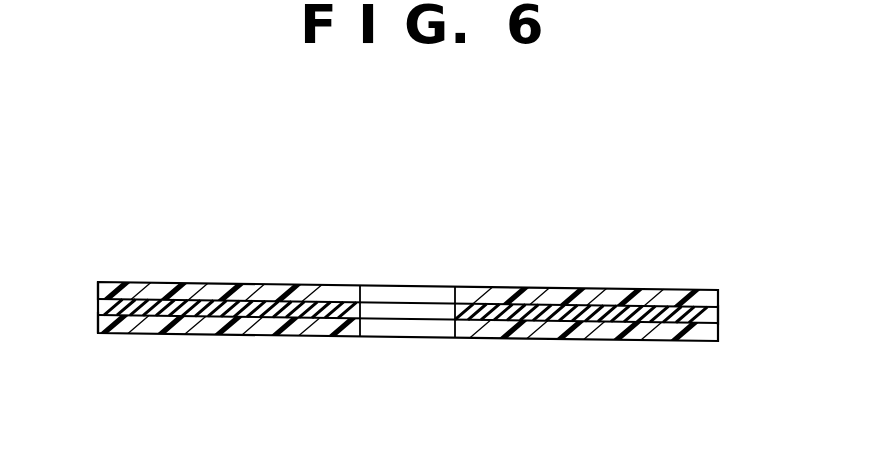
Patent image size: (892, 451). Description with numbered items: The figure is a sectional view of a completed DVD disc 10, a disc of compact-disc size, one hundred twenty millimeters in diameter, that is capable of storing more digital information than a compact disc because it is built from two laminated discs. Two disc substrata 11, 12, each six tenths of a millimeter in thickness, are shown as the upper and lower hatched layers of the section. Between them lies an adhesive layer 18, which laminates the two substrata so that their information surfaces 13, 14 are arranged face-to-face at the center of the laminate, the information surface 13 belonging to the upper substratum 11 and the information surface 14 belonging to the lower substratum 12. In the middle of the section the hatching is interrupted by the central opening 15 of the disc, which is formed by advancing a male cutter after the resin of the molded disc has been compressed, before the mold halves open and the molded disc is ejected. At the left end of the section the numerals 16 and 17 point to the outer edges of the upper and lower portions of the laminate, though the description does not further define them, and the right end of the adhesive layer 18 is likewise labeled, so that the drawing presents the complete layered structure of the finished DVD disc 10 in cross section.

The laminated sheet 10 is at (557, 287).
The disc substratum 11 is at (712, 293).
The disc substratum 12 is at (702, 332).
The information surface 13 is at (208, 304).
The information surface 14 is at (262, 312).
The central opening 15 is at (450, 294).
The left end of upper portion 16 is at (98, 302).
The left end of lower portion 17 is at (98, 312).
The adhesive layer 18 is at (715, 315).